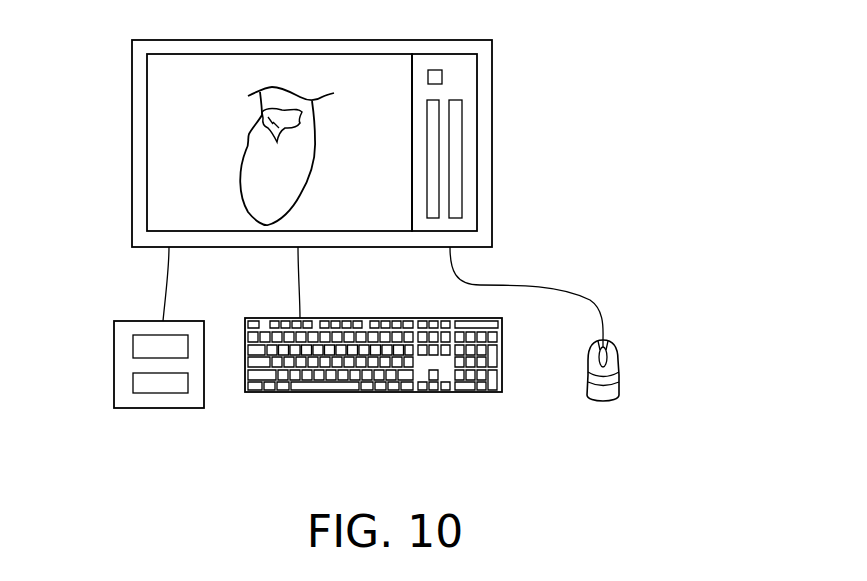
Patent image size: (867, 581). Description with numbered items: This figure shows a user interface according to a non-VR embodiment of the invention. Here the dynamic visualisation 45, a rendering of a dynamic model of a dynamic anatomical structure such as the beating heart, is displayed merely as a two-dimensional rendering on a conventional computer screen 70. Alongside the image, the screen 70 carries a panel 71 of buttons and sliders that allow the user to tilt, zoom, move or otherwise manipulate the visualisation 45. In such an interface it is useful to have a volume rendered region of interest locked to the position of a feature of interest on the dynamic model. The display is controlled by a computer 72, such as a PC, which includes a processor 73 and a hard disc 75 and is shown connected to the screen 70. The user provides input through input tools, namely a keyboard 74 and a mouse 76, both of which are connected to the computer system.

The computer screen 70 is at (132, 105).
The panel 71 is at (451, 88).
The dynamic visualisation 45 is at (215, 106).
The computer 72 is at (117, 352).
The processor 73 is at (146, 345).
The hard disc 75 is at (153, 393).
The keyboard 74 is at (308, 393).
The mouse 76 is at (620, 390).